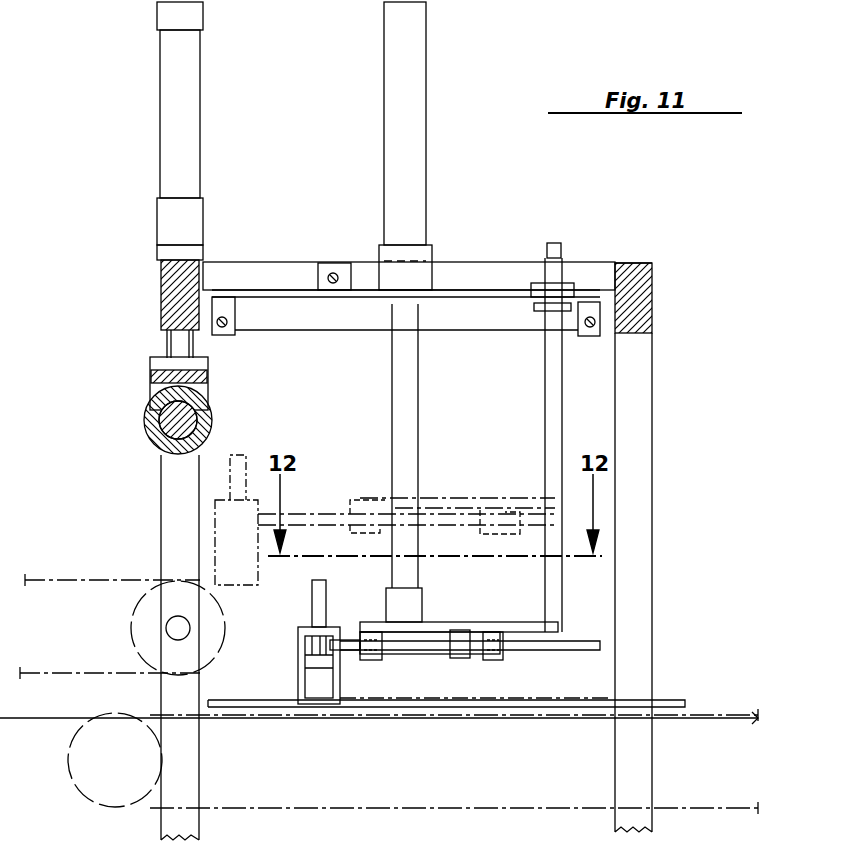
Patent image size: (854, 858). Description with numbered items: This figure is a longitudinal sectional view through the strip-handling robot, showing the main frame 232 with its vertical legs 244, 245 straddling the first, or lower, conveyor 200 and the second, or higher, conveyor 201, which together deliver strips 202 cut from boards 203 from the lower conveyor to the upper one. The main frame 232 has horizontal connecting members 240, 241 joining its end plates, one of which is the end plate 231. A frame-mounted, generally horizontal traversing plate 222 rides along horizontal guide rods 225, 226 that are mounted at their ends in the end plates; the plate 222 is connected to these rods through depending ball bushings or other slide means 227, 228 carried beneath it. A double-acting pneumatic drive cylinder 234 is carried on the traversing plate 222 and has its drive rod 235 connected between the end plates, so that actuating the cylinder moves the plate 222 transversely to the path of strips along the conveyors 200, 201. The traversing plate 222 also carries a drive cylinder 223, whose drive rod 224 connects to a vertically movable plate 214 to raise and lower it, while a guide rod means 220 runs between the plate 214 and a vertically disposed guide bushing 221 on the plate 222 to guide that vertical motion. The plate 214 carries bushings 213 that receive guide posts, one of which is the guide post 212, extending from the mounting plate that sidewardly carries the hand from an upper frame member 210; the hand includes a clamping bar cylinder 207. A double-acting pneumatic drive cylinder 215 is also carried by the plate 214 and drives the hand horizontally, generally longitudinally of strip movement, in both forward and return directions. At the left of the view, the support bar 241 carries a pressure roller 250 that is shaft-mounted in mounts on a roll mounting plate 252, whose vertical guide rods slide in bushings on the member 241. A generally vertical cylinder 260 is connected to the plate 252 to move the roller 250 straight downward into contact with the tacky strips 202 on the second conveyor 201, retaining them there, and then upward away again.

The first conveyor 200 is at (90, 718).
The second conveyor 201 is at (148, 588).
The strips 202 is at (660, 700).
The boards 203 is at (700, 707).
The clamping bar cylinder 207 is at (315, 600).
The upper frame member 210 is at (325, 633).
The guide post 212 is at (562, 655).
The bushings 213 is at (492, 660).
The vertically movable plate 214 is at (476, 628).
The drive cylinder 215 is at (430, 632).
The guide rod means 220 is at (558, 378).
The guide bushing 221 is at (560, 266).
The traversing plate 222 is at (475, 297).
The drive cylinder 223 is at (412, 130).
The drive rod 224 is at (406, 432).
The guide rod 225 is at (596, 322).
The guide rod 226 is at (217, 322).
The slide means 227 is at (600, 311).
The slide means 228 is at (220, 310).
The end plate 231 is at (445, 268).
The main frame 232 is at (646, 268).
The drive cylinder 234 is at (340, 268).
The drive rod 235 is at (330, 276).
The horizontal connecting member 240 is at (660, 262).
The horizontal connecting member 241 is at (162, 268).
The vertical leg 244 is at (173, 478).
The vertical leg 245 is at (652, 438).
The pressure roller 250 is at (145, 417).
The roll mounting plate 252 is at (208, 376).
The cylinder 260 is at (172, 127).